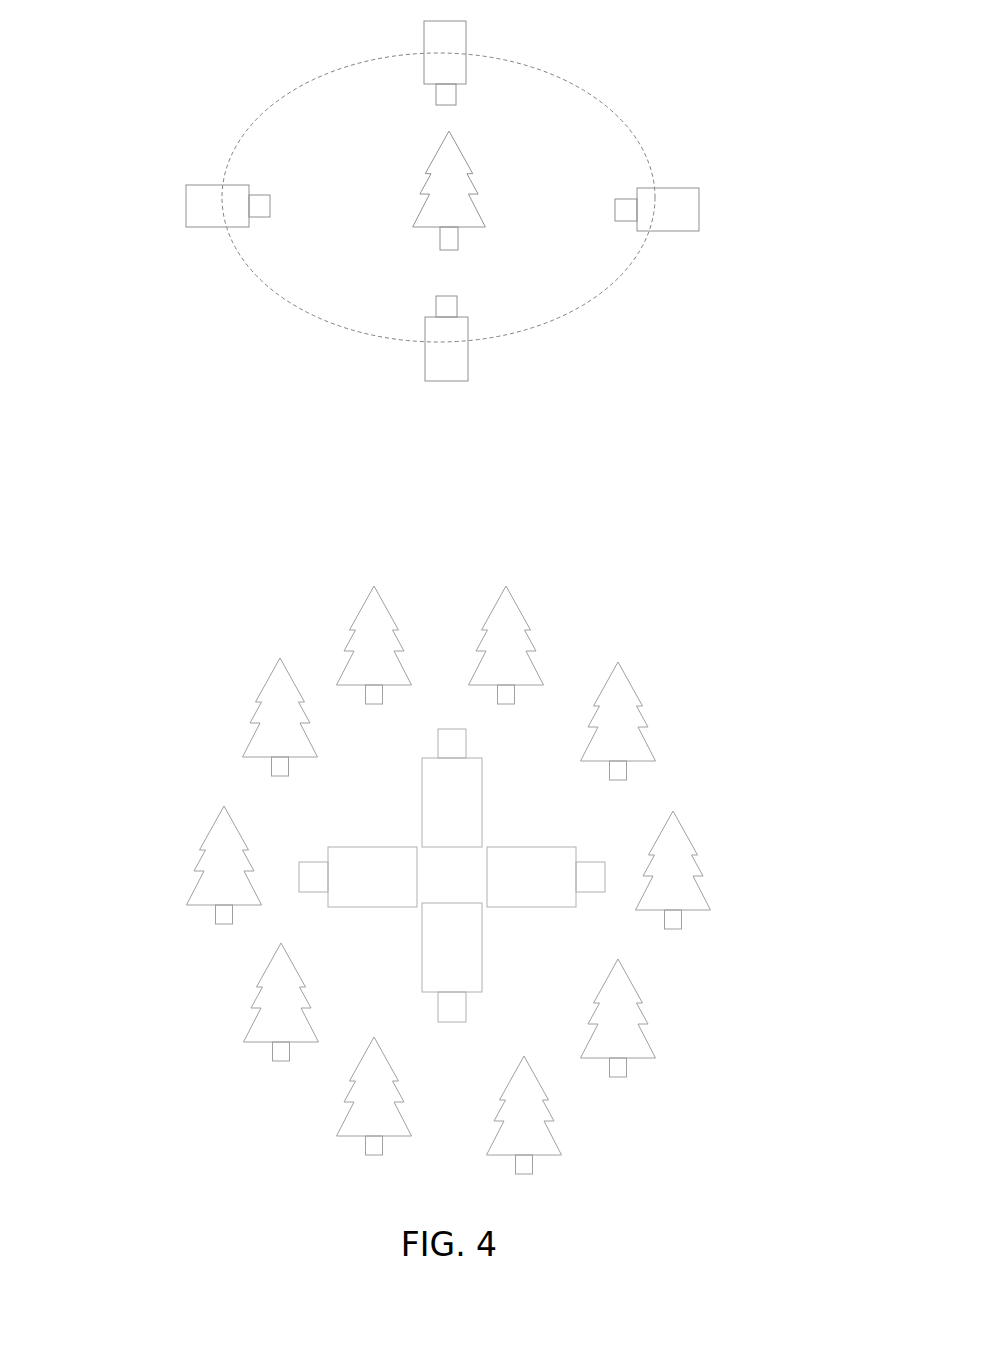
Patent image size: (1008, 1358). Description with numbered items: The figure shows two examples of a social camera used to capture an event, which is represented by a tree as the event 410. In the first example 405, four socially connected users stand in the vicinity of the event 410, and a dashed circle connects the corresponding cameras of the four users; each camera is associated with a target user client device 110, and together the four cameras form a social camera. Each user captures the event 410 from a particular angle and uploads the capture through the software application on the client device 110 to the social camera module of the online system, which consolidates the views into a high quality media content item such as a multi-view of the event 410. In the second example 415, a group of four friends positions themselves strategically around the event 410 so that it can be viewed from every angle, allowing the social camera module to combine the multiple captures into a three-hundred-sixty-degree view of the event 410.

The Example 1 405 is at (75, 107).
The event 410 is at (478, 178).
The client device 110 is at (698, 232).
The example 415 is at (75, 797).